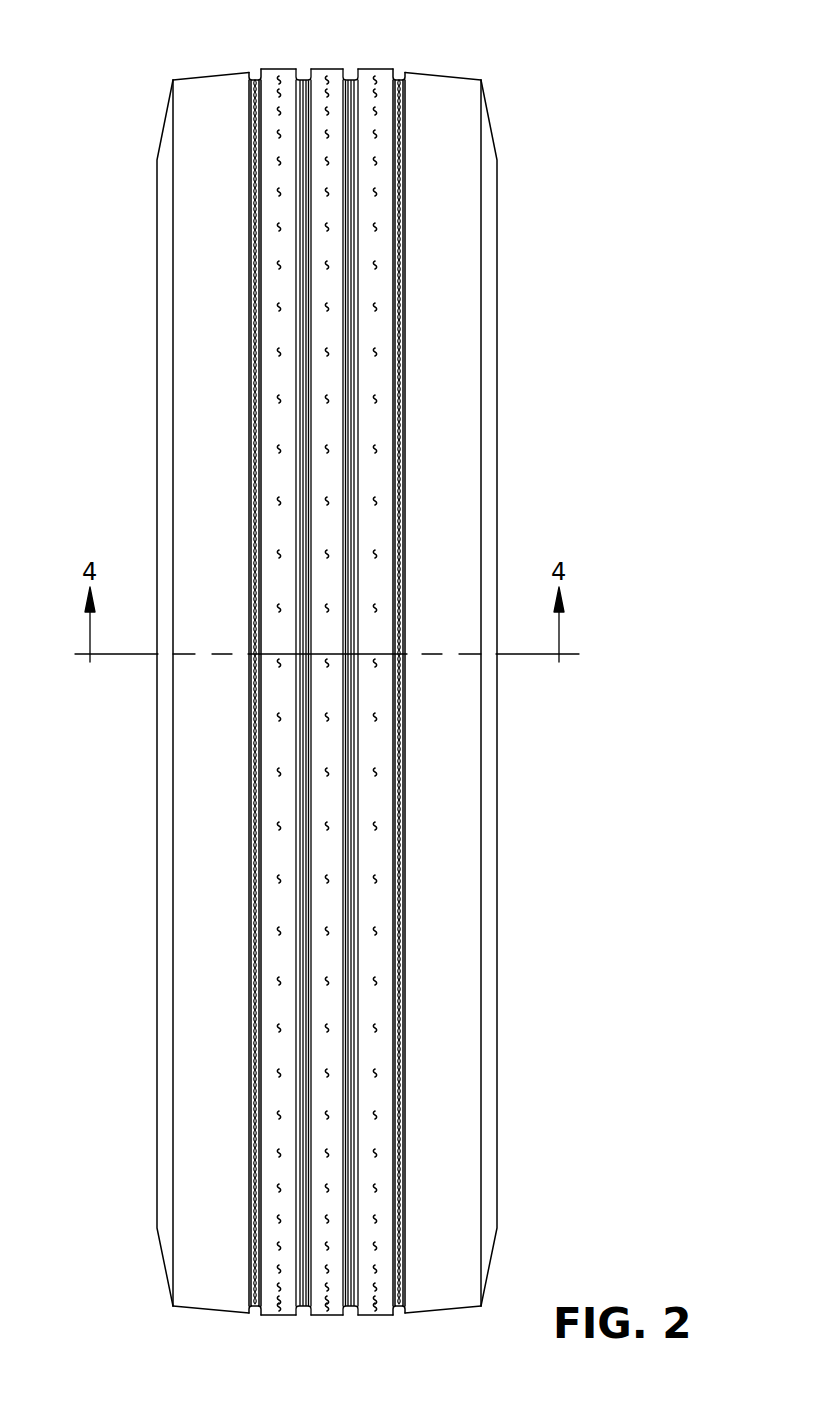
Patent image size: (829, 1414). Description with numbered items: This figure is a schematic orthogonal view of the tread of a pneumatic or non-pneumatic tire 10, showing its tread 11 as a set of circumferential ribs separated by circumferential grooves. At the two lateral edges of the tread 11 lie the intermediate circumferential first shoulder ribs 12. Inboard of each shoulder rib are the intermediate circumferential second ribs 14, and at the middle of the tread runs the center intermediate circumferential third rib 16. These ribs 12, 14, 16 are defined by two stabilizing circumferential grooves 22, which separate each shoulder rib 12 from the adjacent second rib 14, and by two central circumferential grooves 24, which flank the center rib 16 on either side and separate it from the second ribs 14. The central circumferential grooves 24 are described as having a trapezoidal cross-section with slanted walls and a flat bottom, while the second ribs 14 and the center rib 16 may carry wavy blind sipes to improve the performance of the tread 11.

The tire 10 is at (622, 140).
The tread 11 is at (670, 190).
The intermediate circumferential first shoulder ribs 12 is at (203, 163).
The intermediate circumferential second ribs 14 is at (277, 243).
The center intermediate circumferential third rib 16 is at (330, 333).
The stabilizing circumferential grooves 22 is at (255, 78).
The central circumferential grooves 24 is at (352, 78).